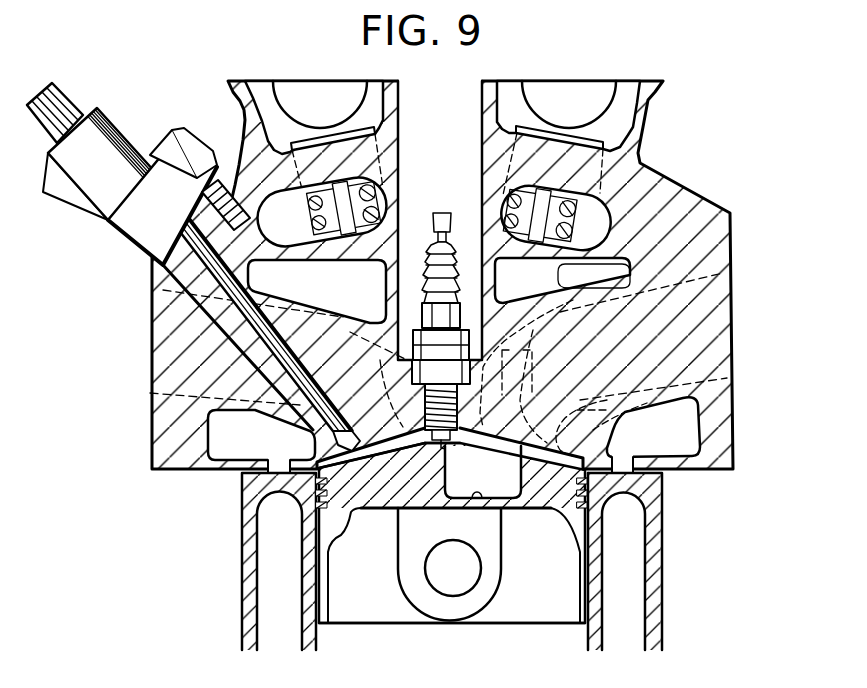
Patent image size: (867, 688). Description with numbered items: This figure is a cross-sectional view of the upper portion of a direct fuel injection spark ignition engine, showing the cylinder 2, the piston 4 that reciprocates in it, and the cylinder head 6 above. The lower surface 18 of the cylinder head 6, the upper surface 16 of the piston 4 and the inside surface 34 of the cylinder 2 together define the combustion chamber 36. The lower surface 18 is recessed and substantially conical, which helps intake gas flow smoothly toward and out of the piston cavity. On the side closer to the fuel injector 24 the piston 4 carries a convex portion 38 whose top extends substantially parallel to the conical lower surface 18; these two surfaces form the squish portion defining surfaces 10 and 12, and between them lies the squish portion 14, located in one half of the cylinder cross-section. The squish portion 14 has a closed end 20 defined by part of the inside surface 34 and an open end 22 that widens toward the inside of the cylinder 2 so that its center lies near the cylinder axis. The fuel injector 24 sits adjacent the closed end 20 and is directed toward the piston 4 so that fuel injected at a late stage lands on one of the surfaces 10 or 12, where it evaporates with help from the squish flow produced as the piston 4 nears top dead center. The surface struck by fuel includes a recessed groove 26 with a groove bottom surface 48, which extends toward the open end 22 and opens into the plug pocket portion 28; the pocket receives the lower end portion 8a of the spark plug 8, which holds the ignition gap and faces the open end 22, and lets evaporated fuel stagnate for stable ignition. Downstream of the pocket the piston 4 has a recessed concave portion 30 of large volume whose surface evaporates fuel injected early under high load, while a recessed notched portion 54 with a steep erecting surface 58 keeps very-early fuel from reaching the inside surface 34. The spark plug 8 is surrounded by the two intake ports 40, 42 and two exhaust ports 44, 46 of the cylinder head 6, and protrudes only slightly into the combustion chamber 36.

The cylinder 2 is at (592, 578).
The piston 4 is at (337, 522).
The cylinder head 6 is at (442, 299).
The spark plug 8 is at (441, 212).
The lower end portion of the spark plug 8a is at (443, 444).
The squish portion defining surface 10 is at (371, 456).
The squish portion defining surface 12 is at (317, 437).
The squish portion 14 is at (386, 456).
The upper surface of piston 16 is at (552, 548).
The lower surface of cylinder head 18 is at (497, 443).
The closed end of squish portion 20 is at (312, 448).
The open end of squish portion 22 is at (385, 405).
The fuel injector 24 is at (118, 157).
The recessed groove 26 is at (428, 456).
The plug pocket portion 28 is at (371, 456).
The recessed concave portion 30 is at (480, 498).
The inside surface of cylinder 34 is at (587, 635).
The combustion chamber 36 is at (552, 527).
The convex portion 38 is at (448, 456).
The intake port 40 is at (233, 347).
The intake port 42 is at (225, 399).
The exhaust port 44 is at (646, 291).
The exhaust port 46 is at (653, 389).
The groove bottom surface 48 is at (411, 455).
The recessed notched portion 54 is at (618, 442).
The erecting surface 58 is at (632, 420).